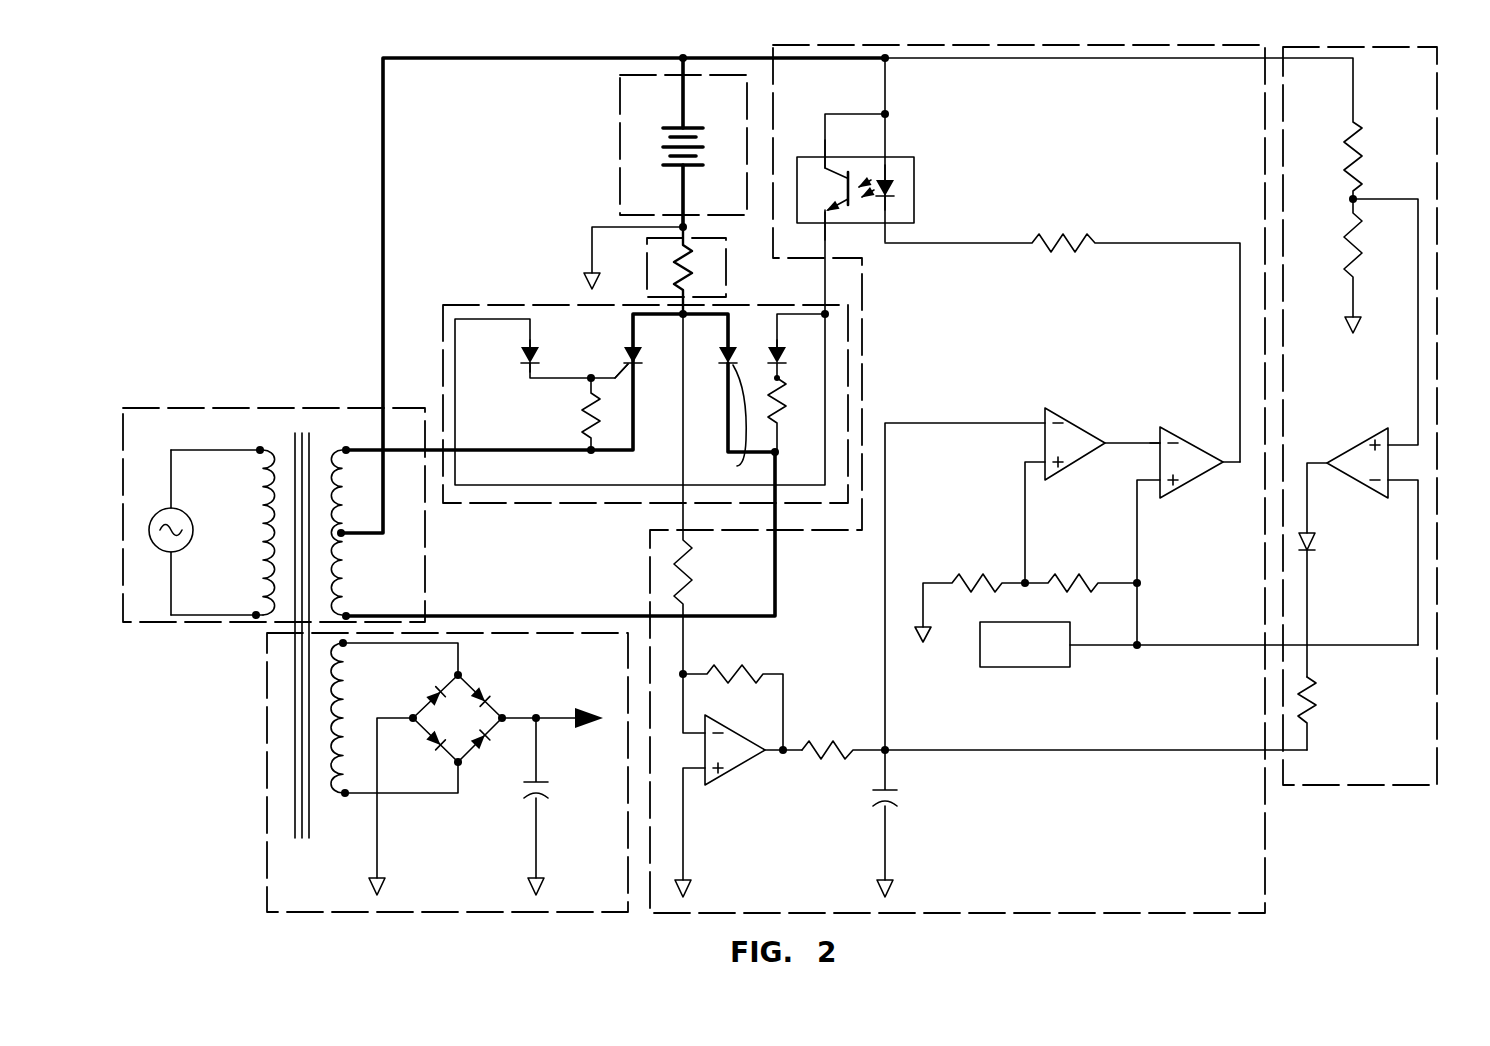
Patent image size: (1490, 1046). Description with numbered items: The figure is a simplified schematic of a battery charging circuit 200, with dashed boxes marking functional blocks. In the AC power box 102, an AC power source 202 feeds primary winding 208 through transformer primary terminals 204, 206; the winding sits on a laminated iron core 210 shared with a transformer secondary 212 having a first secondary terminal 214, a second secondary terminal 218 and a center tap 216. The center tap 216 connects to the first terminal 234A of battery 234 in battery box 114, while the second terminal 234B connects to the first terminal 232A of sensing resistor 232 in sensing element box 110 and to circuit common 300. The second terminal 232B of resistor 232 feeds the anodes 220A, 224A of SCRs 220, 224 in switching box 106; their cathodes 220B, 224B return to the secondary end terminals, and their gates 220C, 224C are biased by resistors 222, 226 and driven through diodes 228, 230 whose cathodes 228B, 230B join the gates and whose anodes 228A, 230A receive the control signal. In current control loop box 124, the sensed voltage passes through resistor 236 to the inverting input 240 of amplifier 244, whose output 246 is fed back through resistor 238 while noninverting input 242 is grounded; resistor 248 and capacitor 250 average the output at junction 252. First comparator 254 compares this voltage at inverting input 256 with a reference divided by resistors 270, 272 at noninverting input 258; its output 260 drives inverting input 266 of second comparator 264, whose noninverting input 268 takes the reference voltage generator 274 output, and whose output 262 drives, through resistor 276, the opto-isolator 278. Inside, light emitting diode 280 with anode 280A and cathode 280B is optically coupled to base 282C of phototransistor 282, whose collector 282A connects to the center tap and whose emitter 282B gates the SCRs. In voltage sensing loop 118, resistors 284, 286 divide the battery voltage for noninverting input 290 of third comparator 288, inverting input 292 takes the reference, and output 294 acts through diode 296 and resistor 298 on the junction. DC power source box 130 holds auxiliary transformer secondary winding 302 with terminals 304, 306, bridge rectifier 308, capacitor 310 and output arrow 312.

The AC power box 102 is at (265, 410).
The switching device box 106 is at (443, 320).
The sensing element box 110 is at (647, 262).
The battery box 114 is at (620, 152).
The voltage sensing loop 118 is at (1437, 380).
The current control loop box 124 is at (790, 45).
The DC power source box 130 is at (465, 912).
The circuit 200 is at (295, 168).
The AC power source 202 is at (171, 508).
The transformer primary terminal 204 is at (258, 448).
The transformer primary terminal 206 is at (255, 613).
The primary winding 208 is at (277, 440).
The laminated iron core 210 is at (301, 428).
The transformer secondary 212 is at (328, 440).
The first secondary terminal 214 is at (346, 452).
The center tap 216 is at (341, 532).
The second secondary terminal 218 is at (348, 613).
The SCR 220 is at (628, 352).
The anode 220A is at (633, 347).
The cathode 220B is at (638, 365).
The gate 220C is at (627, 365).
The resistor 222 is at (589, 412).
The SCR 224 is at (722, 352).
The anode 224A is at (723, 347).
The cathode 224B is at (720, 366).
The gate 224C is at (719, 421).
The resistor 226 is at (785, 412).
The diode 228 is at (518, 354).
The anode 228A is at (525, 347).
The cathode 228B is at (521, 366).
The diode 230 is at (771, 352).
The anode 230A is at (780, 345).
The cathode 230B is at (780, 366).
The resistor 232 is at (700, 265).
The first terminal of resistor 232 232A is at (688, 245).
The second terminal of resistor 232 232B is at (683, 290).
The battery 234 is at (672, 146).
The first terminal of battery 234 234A is at (686, 108).
The second terminal of battery 234 234B is at (686, 200).
The resistor 236 is at (690, 560).
The resistor 238 is at (745, 672).
The inverting input 240 is at (702, 733).
The noninverting input 242 is at (705, 768).
The amplifier 244 is at (740, 762).
The output 246 is at (778, 745).
The resistor 248 is at (825, 748).
The capacitor 250 is at (893, 790).
The junction 252 is at (887, 748).
The first comparator 254 is at (1078, 422).
The inverting input 256 is at (1045, 420).
The noninverting input 258 is at (1040, 463).
The output 260 is at (1105, 445).
The output 262 is at (1224, 463).
The second comparator 264 is at (1190, 440).
The inverting input 266 is at (1158, 440).
The noninverting input 268 is at (1150, 482).
The resistor 270 is at (1078, 582).
The resistor 272 is at (970, 582).
The reference voltage generator 274 is at (1062, 667).
The resistor 276 is at (1062, 250).
The opto-isolator 278 is at (902, 151).
The light emitting diode 280 is at (893, 190).
The anode 280A is at (892, 178).
The cathode 280B is at (893, 198).
The phototransistor 282 is at (838, 158).
The collector 282A is at (825, 168).
The emitter 282B is at (828, 216).
The base 282C is at (860, 183).
The resistor 284 is at (1362, 142).
The resistor 286 is at (1362, 252).
The third comparator 288 is at (1360, 445).
The noninverting input 290 is at (1395, 432).
The inverting input 292 is at (1390, 481).
The output 294 is at (1328, 466).
The diode 296 is at (1314, 545).
The resistor 298 is at (1314, 690).
The circuit common 300 is at (583, 282).
The auxiliary transformer secondary winding 302 is at (328, 812).
The terminal 304 is at (348, 646).
The terminal 306 is at (345, 797).
The bridge rectifier 308 is at (495, 672).
The capacitor 310 is at (542, 782).
The arrow 312 is at (592, 713).